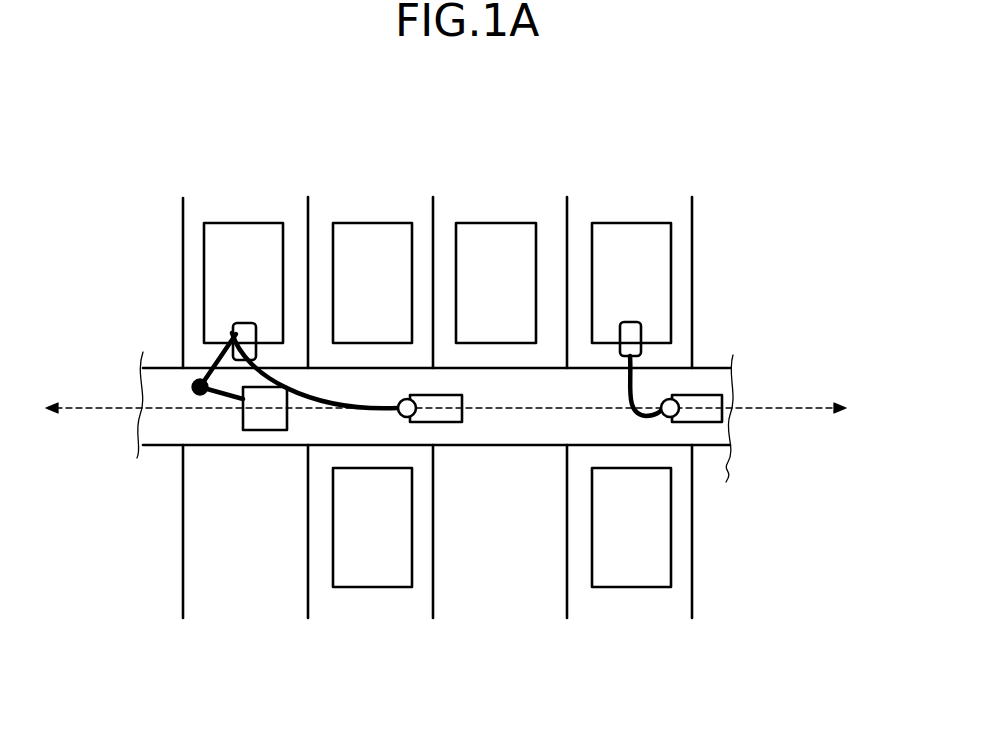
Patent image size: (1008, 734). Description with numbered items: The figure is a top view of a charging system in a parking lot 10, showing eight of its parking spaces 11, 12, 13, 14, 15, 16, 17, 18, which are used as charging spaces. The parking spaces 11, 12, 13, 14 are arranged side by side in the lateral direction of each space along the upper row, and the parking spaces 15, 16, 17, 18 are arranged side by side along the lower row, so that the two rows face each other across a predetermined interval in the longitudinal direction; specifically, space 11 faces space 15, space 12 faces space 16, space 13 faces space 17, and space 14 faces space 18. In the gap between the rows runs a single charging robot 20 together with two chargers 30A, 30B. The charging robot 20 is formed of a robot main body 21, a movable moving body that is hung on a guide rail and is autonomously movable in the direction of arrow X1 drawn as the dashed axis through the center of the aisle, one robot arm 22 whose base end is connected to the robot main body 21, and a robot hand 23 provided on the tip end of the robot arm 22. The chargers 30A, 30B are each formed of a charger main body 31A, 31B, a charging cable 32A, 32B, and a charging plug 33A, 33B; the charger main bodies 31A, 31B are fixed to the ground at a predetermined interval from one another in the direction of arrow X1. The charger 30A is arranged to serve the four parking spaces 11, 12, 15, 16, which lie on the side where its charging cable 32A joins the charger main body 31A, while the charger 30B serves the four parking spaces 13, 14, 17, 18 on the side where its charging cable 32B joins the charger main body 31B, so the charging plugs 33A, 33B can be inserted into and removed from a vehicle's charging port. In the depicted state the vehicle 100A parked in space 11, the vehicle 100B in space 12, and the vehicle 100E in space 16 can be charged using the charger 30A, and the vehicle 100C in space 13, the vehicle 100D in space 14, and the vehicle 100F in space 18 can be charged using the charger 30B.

The parking lot 10 is at (111, 129).
The parking space 11 is at (240, 192).
The parking space 12 is at (367, 190).
The parking space 13 is at (487, 190).
The parking space 14 is at (627, 192).
The parking space 15 is at (250, 601).
The parking space 16 is at (370, 601).
The parking space 17 is at (497, 601).
The parking space 18 is at (630, 601).
The charging robot 20 is at (233, 419).
The robot main body 21 is at (263, 418).
The robot arm 22 is at (224, 368).
The robot hand 23 is at (233, 340).
The charger 30A is at (471, 424).
The charger 30B is at (737, 426).
The charger main body 31A is at (457, 423).
The charger main body 31B is at (716, 423).
The charging cable 32A is at (313, 409).
The charging cable 32B is at (640, 385).
The charging plug 33A is at (242, 323).
The charging plug 33B is at (641, 330).
The vehicle 100A is at (260, 223).
The vehicle 100B is at (385, 223).
The vehicle 100C is at (513, 223).
The vehicle 100D is at (648, 223).
The vehicle 100E is at (345, 588).
The vehicle 100F is at (607, 588).
The direction of arrow X1 is at (802, 408).